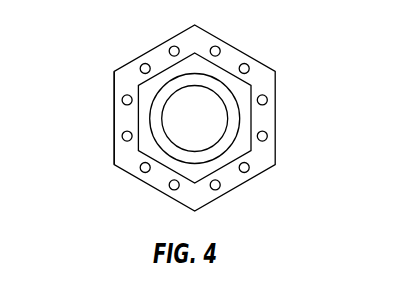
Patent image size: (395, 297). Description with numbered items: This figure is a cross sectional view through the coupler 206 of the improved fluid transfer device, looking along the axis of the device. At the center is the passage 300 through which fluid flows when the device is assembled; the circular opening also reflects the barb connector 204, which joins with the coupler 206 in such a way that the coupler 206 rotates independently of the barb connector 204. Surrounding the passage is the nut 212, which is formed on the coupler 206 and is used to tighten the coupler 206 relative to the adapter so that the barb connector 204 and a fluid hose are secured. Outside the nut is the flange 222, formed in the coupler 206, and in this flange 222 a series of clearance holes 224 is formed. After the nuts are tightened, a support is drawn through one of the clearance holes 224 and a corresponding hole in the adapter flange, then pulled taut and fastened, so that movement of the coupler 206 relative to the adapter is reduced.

The barb connector 204 is at (126, 162).
The coupler 206 is at (215, 165).
The nut 212 is at (137, 113).
The flange 222 is at (262, 78).
The clearance holes 224 is at (169, 48).
The passage 300 is at (208, 130).